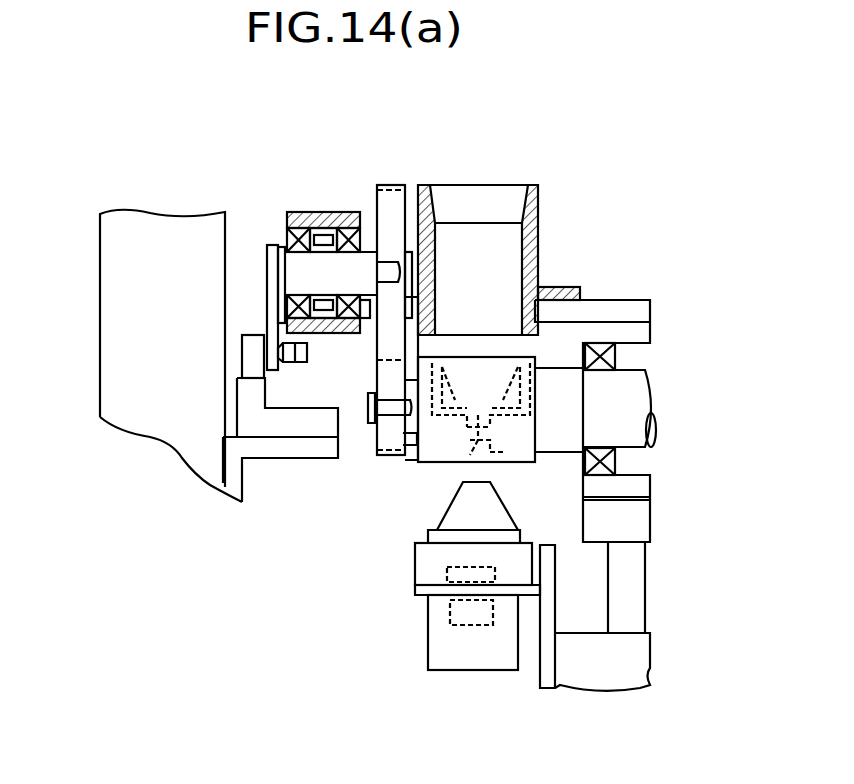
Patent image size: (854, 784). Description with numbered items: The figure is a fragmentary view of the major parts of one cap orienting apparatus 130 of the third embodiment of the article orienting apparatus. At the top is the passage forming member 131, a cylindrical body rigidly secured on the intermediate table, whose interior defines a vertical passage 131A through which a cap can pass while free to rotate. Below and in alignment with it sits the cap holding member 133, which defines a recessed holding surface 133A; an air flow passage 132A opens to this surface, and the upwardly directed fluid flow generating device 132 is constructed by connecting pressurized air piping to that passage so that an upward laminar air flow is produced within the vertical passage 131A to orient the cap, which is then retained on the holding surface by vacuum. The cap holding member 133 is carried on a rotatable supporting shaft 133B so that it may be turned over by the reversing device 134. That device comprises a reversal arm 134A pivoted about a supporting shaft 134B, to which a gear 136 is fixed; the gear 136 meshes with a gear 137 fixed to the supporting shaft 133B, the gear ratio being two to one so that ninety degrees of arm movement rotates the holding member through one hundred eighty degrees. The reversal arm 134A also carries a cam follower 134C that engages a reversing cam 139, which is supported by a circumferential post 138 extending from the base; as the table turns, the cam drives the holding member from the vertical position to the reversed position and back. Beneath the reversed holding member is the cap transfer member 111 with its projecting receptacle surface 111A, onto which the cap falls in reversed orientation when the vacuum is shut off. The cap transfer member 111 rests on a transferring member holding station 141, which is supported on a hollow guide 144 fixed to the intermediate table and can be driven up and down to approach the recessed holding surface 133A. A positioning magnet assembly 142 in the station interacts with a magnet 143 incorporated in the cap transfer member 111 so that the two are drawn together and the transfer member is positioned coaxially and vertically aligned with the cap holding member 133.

The cap orienting apparatus 130 is at (627, 238).
The passage forming member 131 is at (538, 218).
The vertical passage 131A is at (524, 248).
The upwardly directed fluid flow generating device 132 is at (506, 444).
The air flow passage 132A is at (455, 443).
The cap holding member 133 is at (418, 455).
The recessed holding surface 133A is at (498, 365).
The supporting shaft 133B is at (655, 430).
The reversing device 134 is at (267, 247).
The reversal arm 134A is at (268, 310).
The supporting shaft 134B is at (323, 257).
The cam follower 134C is at (245, 355).
The gear 136 is at (391, 192).
The gear 137 is at (370, 380).
The circumferential post 138 is at (103, 372).
The reversing cam 139 is at (247, 410).
The cap transfer member 111 is at (415, 563).
The projecting receptacle surface 111A is at (505, 515).
The transferring member holding station 141 is at (418, 592).
The positioning magnet assembly 142 is at (470, 625).
The magnet 143 is at (423, 633).
The hollow guide 144 is at (645, 603).